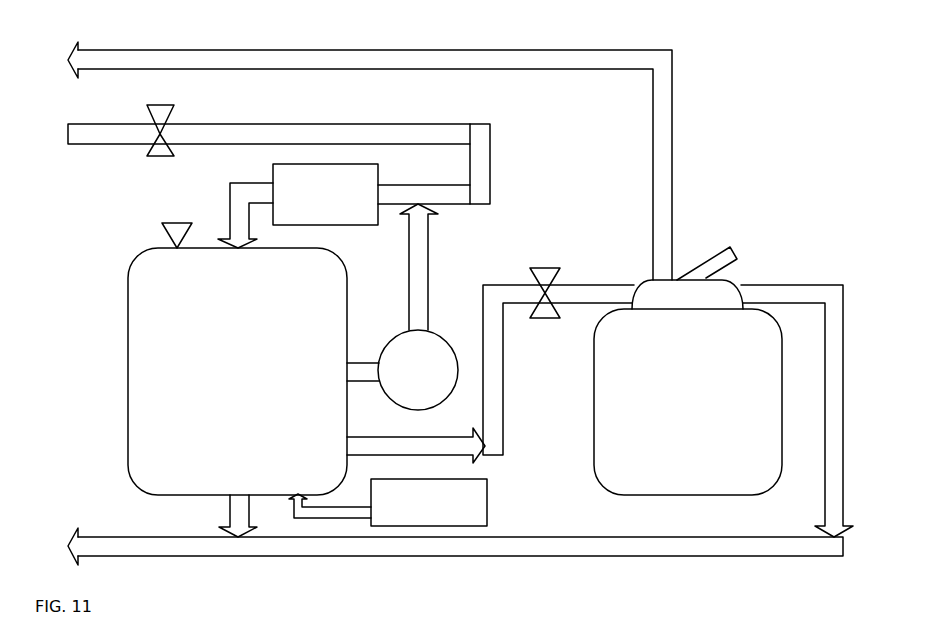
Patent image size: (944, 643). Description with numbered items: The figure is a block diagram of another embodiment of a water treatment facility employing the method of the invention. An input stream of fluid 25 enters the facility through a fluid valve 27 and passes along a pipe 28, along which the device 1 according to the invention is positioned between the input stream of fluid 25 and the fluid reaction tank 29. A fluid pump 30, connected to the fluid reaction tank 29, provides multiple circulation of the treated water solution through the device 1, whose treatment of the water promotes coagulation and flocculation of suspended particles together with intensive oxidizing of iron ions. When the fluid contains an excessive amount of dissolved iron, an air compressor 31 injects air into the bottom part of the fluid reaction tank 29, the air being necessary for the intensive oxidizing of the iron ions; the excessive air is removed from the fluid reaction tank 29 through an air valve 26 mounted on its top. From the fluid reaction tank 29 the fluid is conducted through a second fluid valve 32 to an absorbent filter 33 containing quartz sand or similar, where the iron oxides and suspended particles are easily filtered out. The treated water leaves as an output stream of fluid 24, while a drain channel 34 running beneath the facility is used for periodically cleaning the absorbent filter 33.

The device 1 is at (344, 247).
The output stream of fluid 24 is at (370, 146).
The input stream of fluid 25 is at (269, 155).
The air valve 26 is at (158, 235).
The fluid valve 27 is at (161, 146).
The pipe 28 is at (499, 164).
The fluid reaction tank 29 is at (306, 392).
The fluid pump 30 is at (418, 370).
The air compressor 31 is at (388, 502).
The fluid valve 32 is at (668, 386).
The absorbent filter 33 is at (688, 371).
The drain channel 34 is at (455, 533).